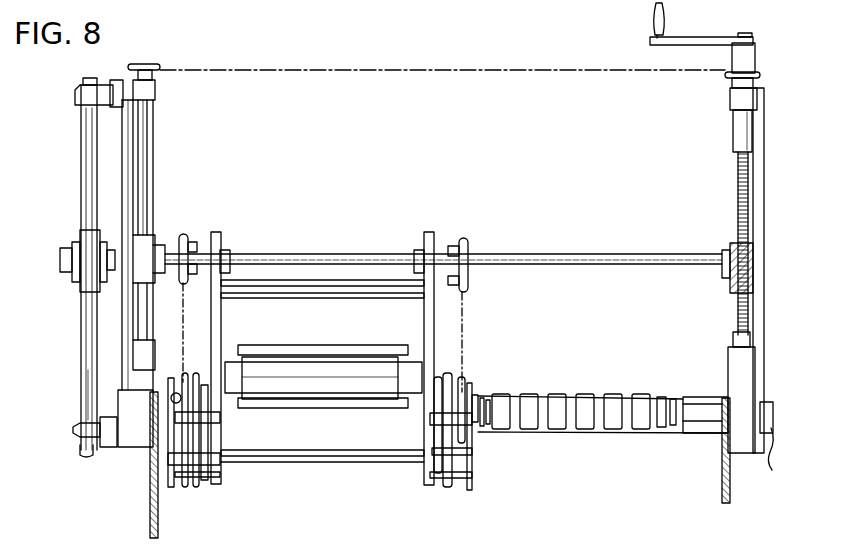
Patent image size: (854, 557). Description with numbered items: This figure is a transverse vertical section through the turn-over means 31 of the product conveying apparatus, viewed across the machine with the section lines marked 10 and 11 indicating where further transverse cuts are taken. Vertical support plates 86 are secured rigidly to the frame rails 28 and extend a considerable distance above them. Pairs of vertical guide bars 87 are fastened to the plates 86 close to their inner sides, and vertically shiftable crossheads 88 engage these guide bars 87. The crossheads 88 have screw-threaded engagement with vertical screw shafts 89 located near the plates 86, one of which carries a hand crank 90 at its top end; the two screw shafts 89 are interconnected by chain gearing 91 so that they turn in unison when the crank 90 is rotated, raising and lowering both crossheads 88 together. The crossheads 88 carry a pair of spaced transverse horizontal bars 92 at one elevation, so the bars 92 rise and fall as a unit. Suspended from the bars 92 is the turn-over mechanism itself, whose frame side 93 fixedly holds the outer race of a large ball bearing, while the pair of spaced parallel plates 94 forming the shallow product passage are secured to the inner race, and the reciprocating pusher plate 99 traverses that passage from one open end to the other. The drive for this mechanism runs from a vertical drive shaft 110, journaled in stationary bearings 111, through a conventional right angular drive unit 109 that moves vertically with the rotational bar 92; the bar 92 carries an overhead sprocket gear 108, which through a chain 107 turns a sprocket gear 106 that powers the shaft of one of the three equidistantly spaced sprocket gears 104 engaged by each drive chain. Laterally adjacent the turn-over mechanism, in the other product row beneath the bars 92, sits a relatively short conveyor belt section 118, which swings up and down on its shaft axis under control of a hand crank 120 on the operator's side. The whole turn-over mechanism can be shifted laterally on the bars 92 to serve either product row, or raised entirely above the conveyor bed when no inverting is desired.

The section line 10- 10 is at (318, 56).
The section line 11- 11 is at (492, 211).
The frame rails 28 is at (140, 437).
The turn-over means 31 is at (77, 316).
The vertical support plates 86 is at (123, 160).
The vertical guide bars 87 is at (153, 144).
The crossheads 88 is at (150, 244).
The vertical screw shafts 89 is at (150, 80).
The hand crank 90 is at (691, 40).
The chain gearing 91 is at (484, 72).
The transverse horizontal bars 92 is at (592, 268).
The frame side 93 is at (216, 331).
The spaced parallel plates 94 is at (315, 356).
The pusher plate 99 is at (368, 390).
The sprocket gears 104 is at (198, 458).
The sprocket gear 106 is at (185, 398).
The chain 107 is at (188, 308).
The overhead sprocket gear 108 is at (190, 240).
The right angular drive unit 109 is at (78, 268).
The vertical drive shaft 110 is at (84, 380).
The bearings 111 is at (75, 94).
The conveyor belt section 118 is at (592, 394).
The hand crank 120 is at (760, 444).